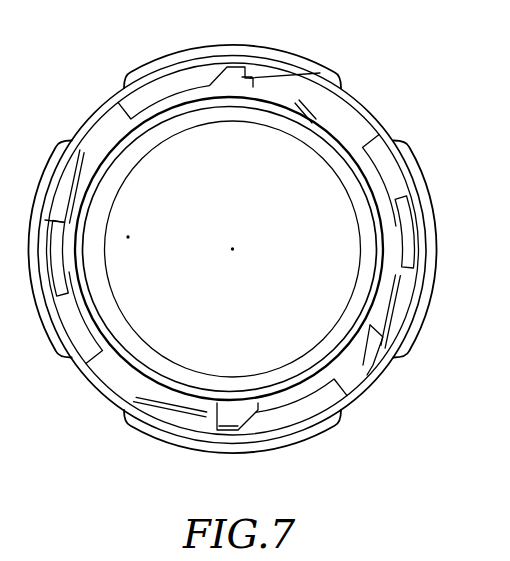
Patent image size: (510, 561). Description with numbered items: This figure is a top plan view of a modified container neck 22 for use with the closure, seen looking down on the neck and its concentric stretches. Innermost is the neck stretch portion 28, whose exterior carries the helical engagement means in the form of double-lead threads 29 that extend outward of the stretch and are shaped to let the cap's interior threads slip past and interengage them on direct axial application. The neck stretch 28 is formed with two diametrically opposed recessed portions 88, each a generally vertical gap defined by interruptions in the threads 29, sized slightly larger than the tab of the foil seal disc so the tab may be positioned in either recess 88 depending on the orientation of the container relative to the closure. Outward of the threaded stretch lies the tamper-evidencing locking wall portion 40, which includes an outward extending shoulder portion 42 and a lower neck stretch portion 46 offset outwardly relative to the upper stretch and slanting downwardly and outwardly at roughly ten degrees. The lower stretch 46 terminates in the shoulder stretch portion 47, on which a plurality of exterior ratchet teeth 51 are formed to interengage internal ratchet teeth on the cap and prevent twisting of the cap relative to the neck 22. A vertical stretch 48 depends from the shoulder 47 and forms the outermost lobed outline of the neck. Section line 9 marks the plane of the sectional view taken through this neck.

The container neck 22 is at (372, 72).
The neck stretch portion 28 is at (103, 173).
The threads 29 is at (378, 165).
The recessed portion 88 is at (357, 172).
The ratchet teeth 51 is at (242, 77).
The vertical stretch 48 is at (428, 212).
The lower neck stretch portion 46 is at (407, 312).
The shoulder stretch portion 47 is at (405, 320).
The shoulder portion 42 is at (383, 337).
The locking wall portion 40 is at (330, 383).
The section line 9- 9 is at (337, 83).